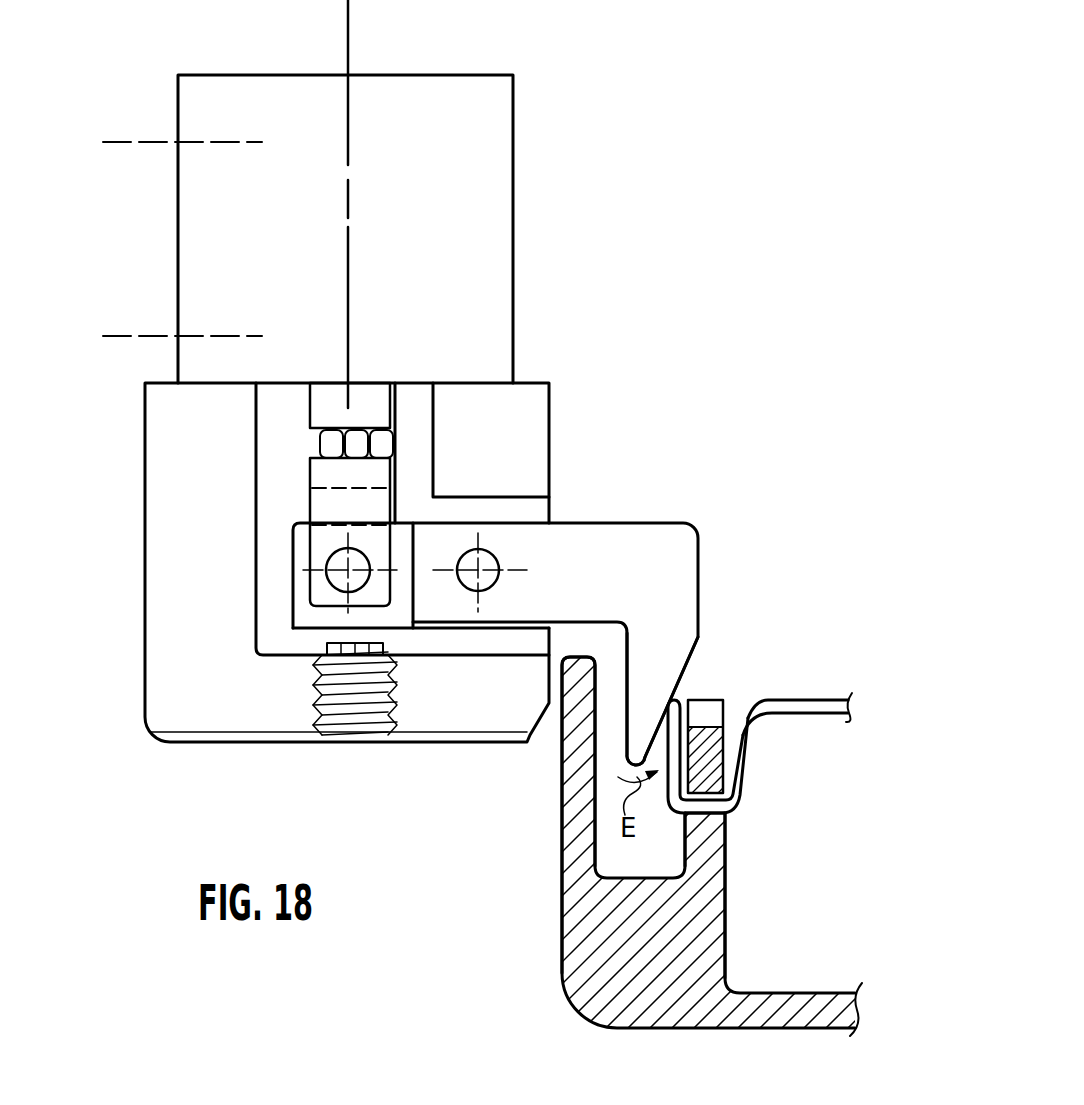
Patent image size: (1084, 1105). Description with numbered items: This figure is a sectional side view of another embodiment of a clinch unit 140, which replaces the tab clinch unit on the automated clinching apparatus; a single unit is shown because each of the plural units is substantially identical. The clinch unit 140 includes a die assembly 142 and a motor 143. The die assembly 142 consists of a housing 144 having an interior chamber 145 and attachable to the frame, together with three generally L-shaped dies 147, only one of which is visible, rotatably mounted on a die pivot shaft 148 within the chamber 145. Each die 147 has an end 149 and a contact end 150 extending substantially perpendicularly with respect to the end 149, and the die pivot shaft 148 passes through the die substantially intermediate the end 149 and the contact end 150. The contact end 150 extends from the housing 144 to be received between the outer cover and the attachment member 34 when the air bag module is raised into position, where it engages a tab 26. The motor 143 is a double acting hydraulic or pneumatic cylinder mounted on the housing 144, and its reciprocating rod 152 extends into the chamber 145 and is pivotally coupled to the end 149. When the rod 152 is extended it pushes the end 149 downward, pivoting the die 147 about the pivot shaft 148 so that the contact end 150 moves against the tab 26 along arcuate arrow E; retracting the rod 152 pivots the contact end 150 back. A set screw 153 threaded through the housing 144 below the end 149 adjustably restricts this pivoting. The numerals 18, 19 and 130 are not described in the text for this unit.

The motor 143 is at (517, 235).
The clinch unit 140 is at (552, 366).
The die assembly 142 is at (553, 473).
The housing 144 is at (550, 413).
The reciprocating rod 152 is at (323, 445).
The end 149 is at (303, 613).
The interior chamber 145 is at (270, 578).
The die 147 is at (597, 545).
The die pivot shaft 148 is at (492, 586).
The set screw 153 is at (307, 740).
The contact end 150 is at (655, 697).
The tab 26 is at (670, 702).
The panel 18 is at (800, 716).
The base 19 is at (573, 998).
The wall 130 is at (573, 815).
The attachment member 34 is at (712, 848).